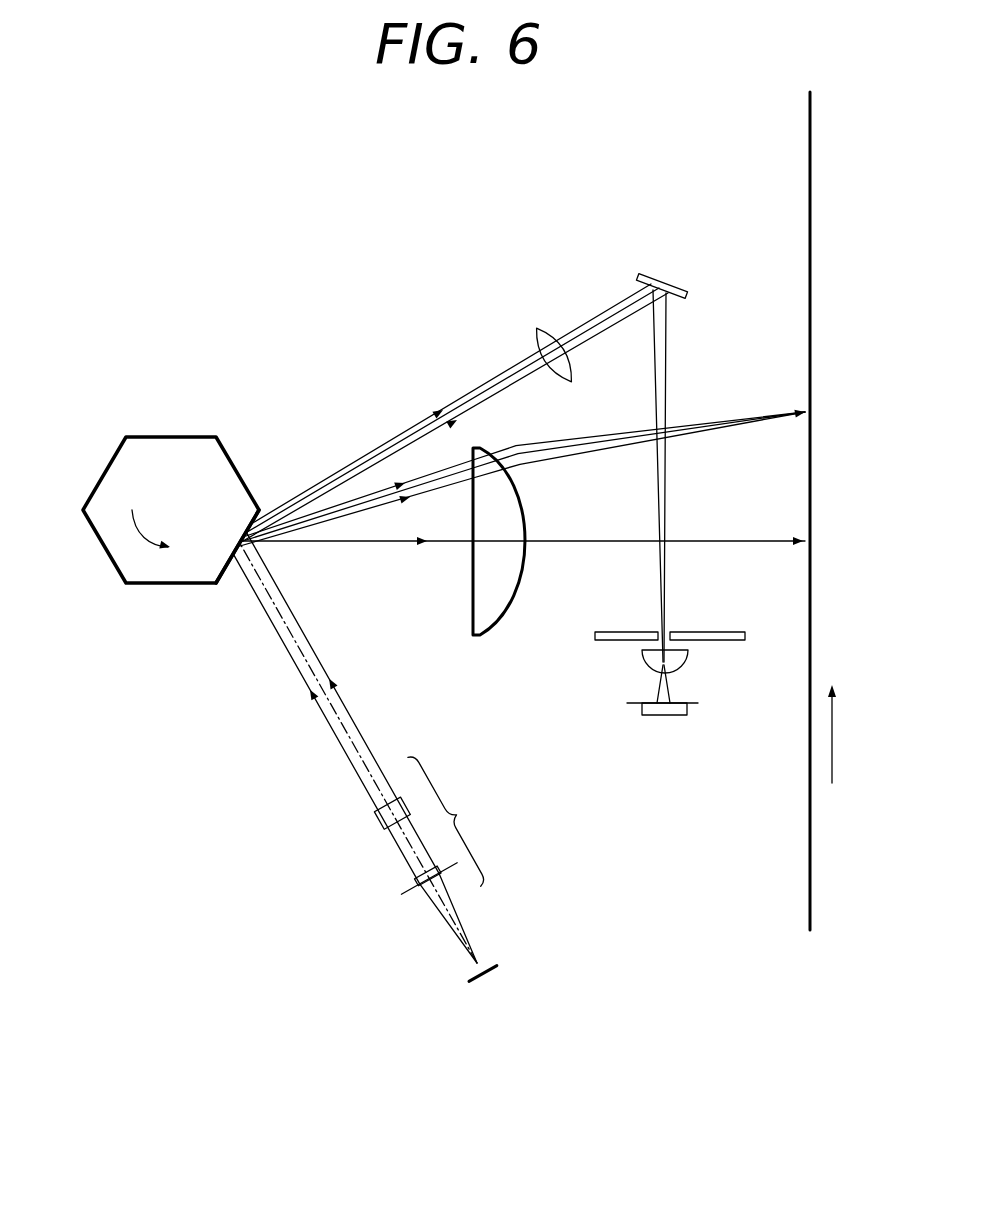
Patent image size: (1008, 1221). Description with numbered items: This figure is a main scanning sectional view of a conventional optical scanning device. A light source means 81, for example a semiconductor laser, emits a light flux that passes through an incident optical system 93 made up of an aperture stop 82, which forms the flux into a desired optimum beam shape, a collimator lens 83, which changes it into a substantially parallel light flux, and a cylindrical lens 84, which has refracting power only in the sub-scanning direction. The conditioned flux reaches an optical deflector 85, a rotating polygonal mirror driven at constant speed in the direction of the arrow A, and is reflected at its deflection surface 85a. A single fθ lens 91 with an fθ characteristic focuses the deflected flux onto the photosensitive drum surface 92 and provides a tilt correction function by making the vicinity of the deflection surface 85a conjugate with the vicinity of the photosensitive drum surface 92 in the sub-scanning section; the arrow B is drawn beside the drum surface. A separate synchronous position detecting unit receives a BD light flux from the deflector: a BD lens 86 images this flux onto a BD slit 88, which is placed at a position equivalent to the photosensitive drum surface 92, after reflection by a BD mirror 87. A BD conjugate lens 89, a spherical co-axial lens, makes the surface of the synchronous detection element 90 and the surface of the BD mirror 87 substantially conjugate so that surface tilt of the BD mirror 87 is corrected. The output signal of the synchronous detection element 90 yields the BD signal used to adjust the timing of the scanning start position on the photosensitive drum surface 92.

The light source means 81 is at (470, 985).
The aperture stop 82 is at (402, 896).
The collimator lens 83 is at (413, 880).
The cylindrical lens 84 is at (372, 812).
The optical deflector 85 is at (140, 587).
The deflection surface 85a is at (219, 586).
The BD lens 86 is at (538, 326).
The BD mirror 87 is at (682, 282).
The BD slit 88 is at (722, 632).
The BD conjugate lens 89 is at (688, 660).
The synchronous detection element 90 is at (690, 705).
The fθ lens 91 is at (476, 640).
The photosensitive drum surface 92 is at (812, 125).
The incident optical system 93 is at (450, 818).
The rotation direction arrow A is at (140, 528).
The movement direction arrow B is at (835, 762).